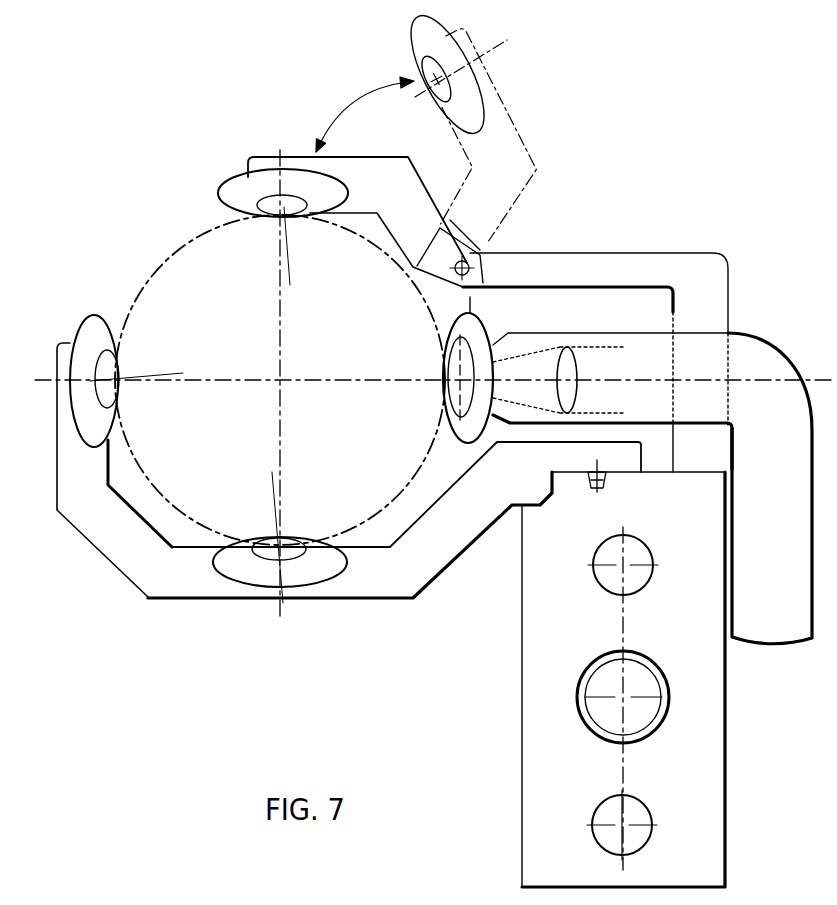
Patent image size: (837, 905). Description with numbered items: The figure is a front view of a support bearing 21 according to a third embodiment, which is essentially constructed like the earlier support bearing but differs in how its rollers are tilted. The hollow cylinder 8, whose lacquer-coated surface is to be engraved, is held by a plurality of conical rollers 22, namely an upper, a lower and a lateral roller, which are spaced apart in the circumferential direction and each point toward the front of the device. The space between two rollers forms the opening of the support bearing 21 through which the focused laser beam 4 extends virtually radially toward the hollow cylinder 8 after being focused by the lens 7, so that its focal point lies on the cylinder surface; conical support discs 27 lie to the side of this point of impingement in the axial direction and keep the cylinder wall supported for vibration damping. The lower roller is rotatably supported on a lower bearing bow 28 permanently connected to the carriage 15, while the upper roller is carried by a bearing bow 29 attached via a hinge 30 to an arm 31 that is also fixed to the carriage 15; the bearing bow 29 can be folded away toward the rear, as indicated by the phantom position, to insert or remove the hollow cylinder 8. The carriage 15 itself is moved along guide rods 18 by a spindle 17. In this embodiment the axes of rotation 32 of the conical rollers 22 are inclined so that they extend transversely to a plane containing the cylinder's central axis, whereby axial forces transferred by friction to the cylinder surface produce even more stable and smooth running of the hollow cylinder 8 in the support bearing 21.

The laser beam 4 is at (537, 350).
The lens 7 is at (577, 368).
The hollow cylinder 8 is at (197, 233).
The carriage 15 is at (684, 790).
The spindle 17 is at (587, 690).
The guide rods 18 is at (598, 562).
The support bearing 21 is at (328, 442).
The conical rollers 22 is at (240, 182).
The support discs 27 is at (492, 338).
The lower bearing bow 28 is at (100, 508).
The bearing bow 29 is at (362, 163).
The hinge 30 is at (481, 335).
The arm 31 is at (705, 277).
The axes of rotation 32 is at (290, 245).